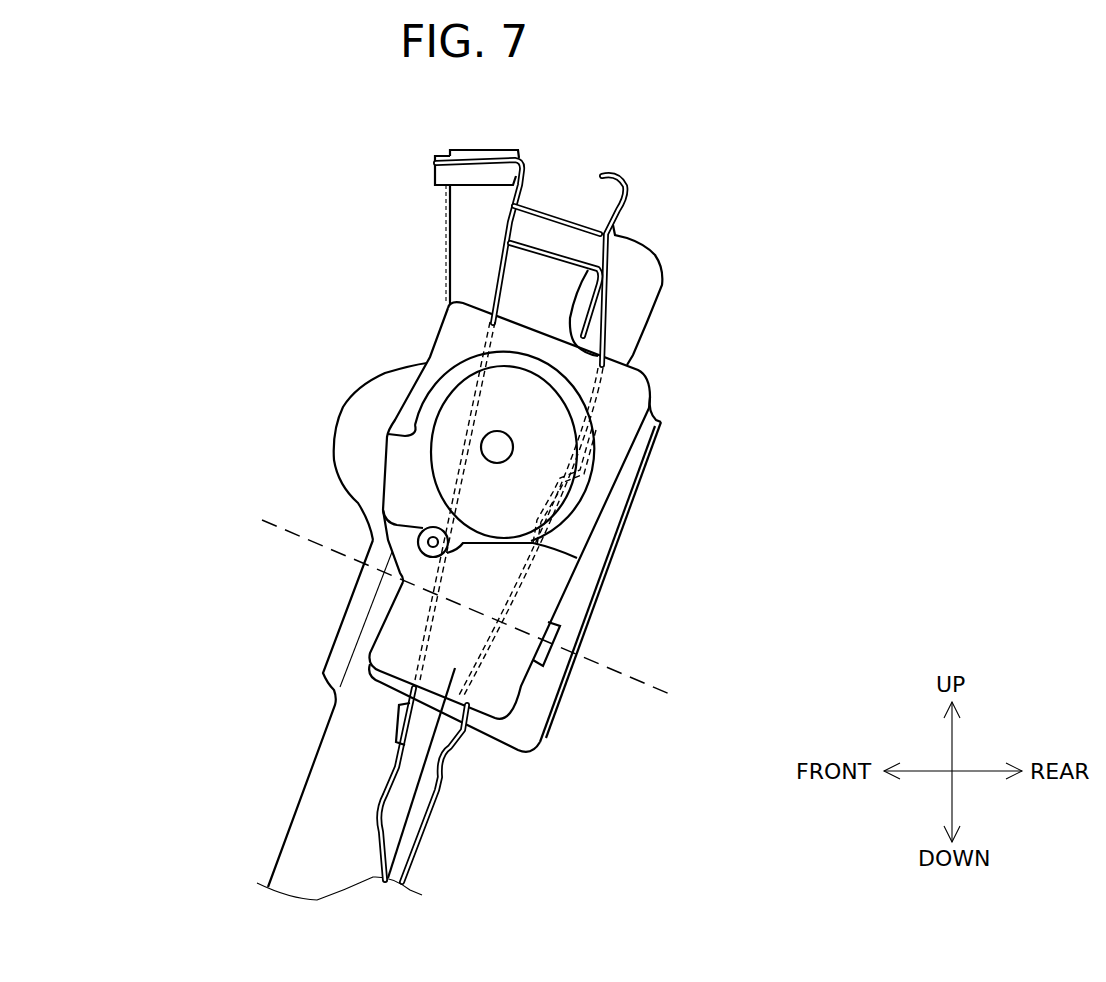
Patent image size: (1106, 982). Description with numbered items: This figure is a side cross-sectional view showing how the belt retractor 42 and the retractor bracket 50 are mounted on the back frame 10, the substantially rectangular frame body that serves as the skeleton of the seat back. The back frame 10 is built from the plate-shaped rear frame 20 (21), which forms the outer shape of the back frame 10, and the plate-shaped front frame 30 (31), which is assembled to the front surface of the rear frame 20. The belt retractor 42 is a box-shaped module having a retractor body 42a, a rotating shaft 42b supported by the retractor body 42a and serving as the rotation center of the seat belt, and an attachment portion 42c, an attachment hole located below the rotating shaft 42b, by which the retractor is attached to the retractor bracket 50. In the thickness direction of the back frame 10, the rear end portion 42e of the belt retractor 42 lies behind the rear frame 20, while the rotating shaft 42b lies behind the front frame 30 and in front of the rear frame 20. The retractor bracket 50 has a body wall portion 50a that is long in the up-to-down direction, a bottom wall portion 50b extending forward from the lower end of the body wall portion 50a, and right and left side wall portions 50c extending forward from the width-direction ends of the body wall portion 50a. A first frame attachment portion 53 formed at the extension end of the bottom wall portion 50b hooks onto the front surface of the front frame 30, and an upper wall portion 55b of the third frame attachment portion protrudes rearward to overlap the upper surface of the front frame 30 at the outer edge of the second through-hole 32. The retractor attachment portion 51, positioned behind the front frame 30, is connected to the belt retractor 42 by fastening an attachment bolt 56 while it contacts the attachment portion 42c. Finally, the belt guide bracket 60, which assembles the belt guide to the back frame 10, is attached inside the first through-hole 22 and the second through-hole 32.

The back frame 10 is at (210, 176).
The rear frame 20 is at (442, 853).
The pipe portion 21 is at (434, 793).
The first through-hole 22 is at (633, 368).
The front frame 30 is at (365, 811).
The housing wall 31 is at (396, 784).
The second through-hole 32 is at (490, 322).
The belt retractor 42 is at (418, 358).
The retractor body 42a is at (380, 451).
The rotating shaft 42b is at (496, 452).
The attachment portion 42c is at (537, 668).
The rear end portion 42e is at (574, 583).
The retractor bracket 50 is at (583, 203).
The body wall portion 50a is at (633, 497).
The bottom wall portion 50b is at (487, 745).
The side wall portions 50c is at (529, 282).
The retractor attachment portion 51 is at (530, 532).
The first frame attachment portion 53 is at (405, 724).
The upper wall portion 55b is at (548, 213).
The attachment bolt 56 is at (553, 628).
The belt guide bracket 60 is at (458, 150).